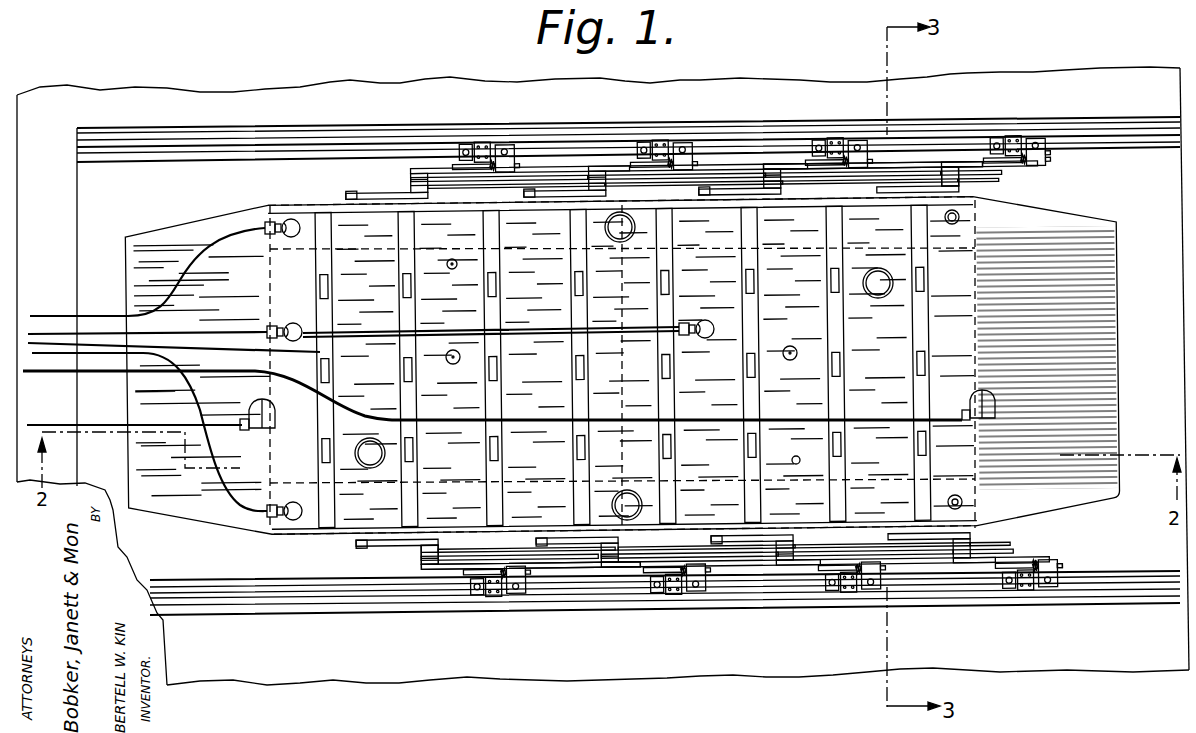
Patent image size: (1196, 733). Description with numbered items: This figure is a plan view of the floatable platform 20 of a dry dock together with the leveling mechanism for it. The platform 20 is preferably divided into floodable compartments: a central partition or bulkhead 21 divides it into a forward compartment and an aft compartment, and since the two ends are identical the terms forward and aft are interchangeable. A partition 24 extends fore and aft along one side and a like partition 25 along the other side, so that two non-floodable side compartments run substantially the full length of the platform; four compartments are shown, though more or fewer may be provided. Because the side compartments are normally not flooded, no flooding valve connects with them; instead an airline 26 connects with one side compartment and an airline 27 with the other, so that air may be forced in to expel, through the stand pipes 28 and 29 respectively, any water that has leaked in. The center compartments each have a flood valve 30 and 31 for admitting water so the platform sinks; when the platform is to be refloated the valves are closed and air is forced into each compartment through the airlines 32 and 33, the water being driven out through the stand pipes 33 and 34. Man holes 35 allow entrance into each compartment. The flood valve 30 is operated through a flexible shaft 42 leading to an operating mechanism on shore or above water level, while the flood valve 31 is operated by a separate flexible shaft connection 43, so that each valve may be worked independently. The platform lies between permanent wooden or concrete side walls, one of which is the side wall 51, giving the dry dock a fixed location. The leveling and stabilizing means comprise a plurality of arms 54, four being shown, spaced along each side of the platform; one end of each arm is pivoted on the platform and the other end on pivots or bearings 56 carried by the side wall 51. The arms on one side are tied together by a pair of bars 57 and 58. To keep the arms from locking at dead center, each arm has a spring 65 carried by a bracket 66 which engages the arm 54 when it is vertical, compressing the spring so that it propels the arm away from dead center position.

The floatable platform 20 is at (1083, 233).
The partition or bulkhead 21 is at (625, 346).
The partition 24 is at (546, 250).
The partition 25 is at (554, 483).
The airline 26 is at (244, 226).
The airline 27 is at (262, 523).
The stand pipe 28 is at (960, 219).
The stand pipe 29 is at (962, 502).
The flood valve 30 is at (265, 425).
The flood valve 31 is at (968, 395).
The airline 32 is at (37, 313).
The airline 33 is at (57, 330).
The stand pipe 34 is at (792, 361).
The man hole 35 is at (618, 238).
The flexible shaft 42 is at (63, 424).
The flexible shaft connection 43 is at (103, 374).
The side wall 51 is at (1072, 80).
The arm 54 is at (456, 162).
The pivot or bearing 56 is at (484, 140).
The bar 57 is at (953, 190).
The bar 58 is at (919, 168).
The spring 65 is at (1040, 562).
The bracket 66 is at (1052, 160).